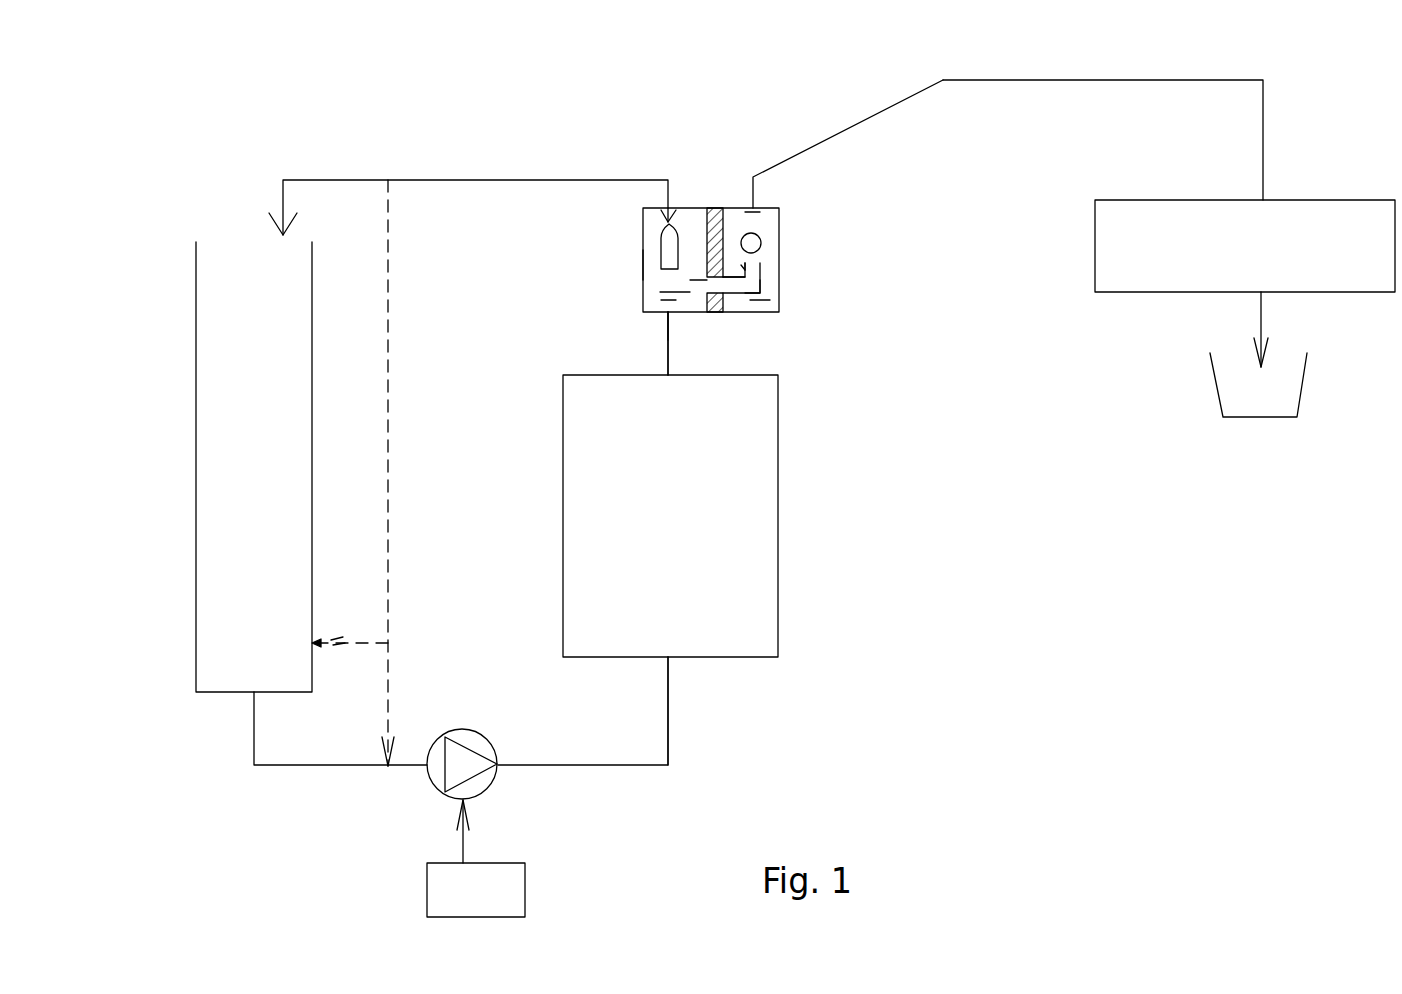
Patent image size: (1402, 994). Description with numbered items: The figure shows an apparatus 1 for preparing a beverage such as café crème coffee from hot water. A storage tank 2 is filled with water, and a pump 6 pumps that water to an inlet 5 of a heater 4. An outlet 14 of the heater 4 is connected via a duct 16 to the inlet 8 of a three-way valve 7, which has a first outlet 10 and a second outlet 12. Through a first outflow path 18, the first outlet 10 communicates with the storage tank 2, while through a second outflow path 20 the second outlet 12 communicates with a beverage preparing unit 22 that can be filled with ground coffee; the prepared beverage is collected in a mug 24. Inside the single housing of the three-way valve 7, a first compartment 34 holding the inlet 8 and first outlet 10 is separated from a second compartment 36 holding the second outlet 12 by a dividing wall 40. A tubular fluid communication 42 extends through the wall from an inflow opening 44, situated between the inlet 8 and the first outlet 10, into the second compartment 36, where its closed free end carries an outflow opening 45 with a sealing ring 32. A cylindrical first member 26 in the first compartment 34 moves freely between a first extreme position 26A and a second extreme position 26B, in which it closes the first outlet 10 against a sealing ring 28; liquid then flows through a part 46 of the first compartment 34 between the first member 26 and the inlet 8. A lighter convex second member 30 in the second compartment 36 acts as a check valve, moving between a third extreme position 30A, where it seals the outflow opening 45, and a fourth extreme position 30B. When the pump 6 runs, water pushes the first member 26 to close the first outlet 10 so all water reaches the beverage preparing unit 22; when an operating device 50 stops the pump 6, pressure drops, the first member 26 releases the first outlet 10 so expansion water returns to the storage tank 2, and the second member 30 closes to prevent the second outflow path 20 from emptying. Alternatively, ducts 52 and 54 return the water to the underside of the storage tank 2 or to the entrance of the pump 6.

The apparatus for preparing a beverage 1 is at (469, 580).
The storage tank 2 is at (196, 485).
The heater 4 is at (778, 515).
The inlet of the heater 5 is at (673, 658).
The pump 6 is at (488, 735).
The three-way valve 7 is at (780, 288).
The inlet of the three-way valve 8 is at (667, 320).
The first outlet 10 is at (790, 223).
The second outlet 12 is at (752, 208).
The outlet of the heater 14 is at (673, 373).
The duct 16 is at (670, 342).
The first outflow path 18 is at (480, 180).
The second outflow path 20 is at (1102, 80).
The beverage preparing unit 22 is at (1308, 210).
The mug 24 is at (1300, 387).
The first member 26 is at (665, 253).
The first extreme position 26A is at (668, 303).
The second extreme position 26B is at (668, 218).
The sealing ring 28 is at (665, 217).
The second member 30 is at (747, 243).
The third extreme position 30A is at (760, 300).
The fourth extreme position 30B is at (750, 216).
The sealing ring 32 is at (763, 263).
The first compartment 34 is at (652, 265).
The second compartment 36 is at (757, 302).
The dividing wall 40 is at (710, 208).
The fluid communication 42 is at (738, 288).
The inflow opening 44 is at (710, 285).
The outflow opening 45 is at (755, 262).
The part of the first compartment 46 is at (672, 292).
The operating device 50 is at (525, 885).
The duct 52 is at (348, 642).
The duct 54 is at (390, 683).